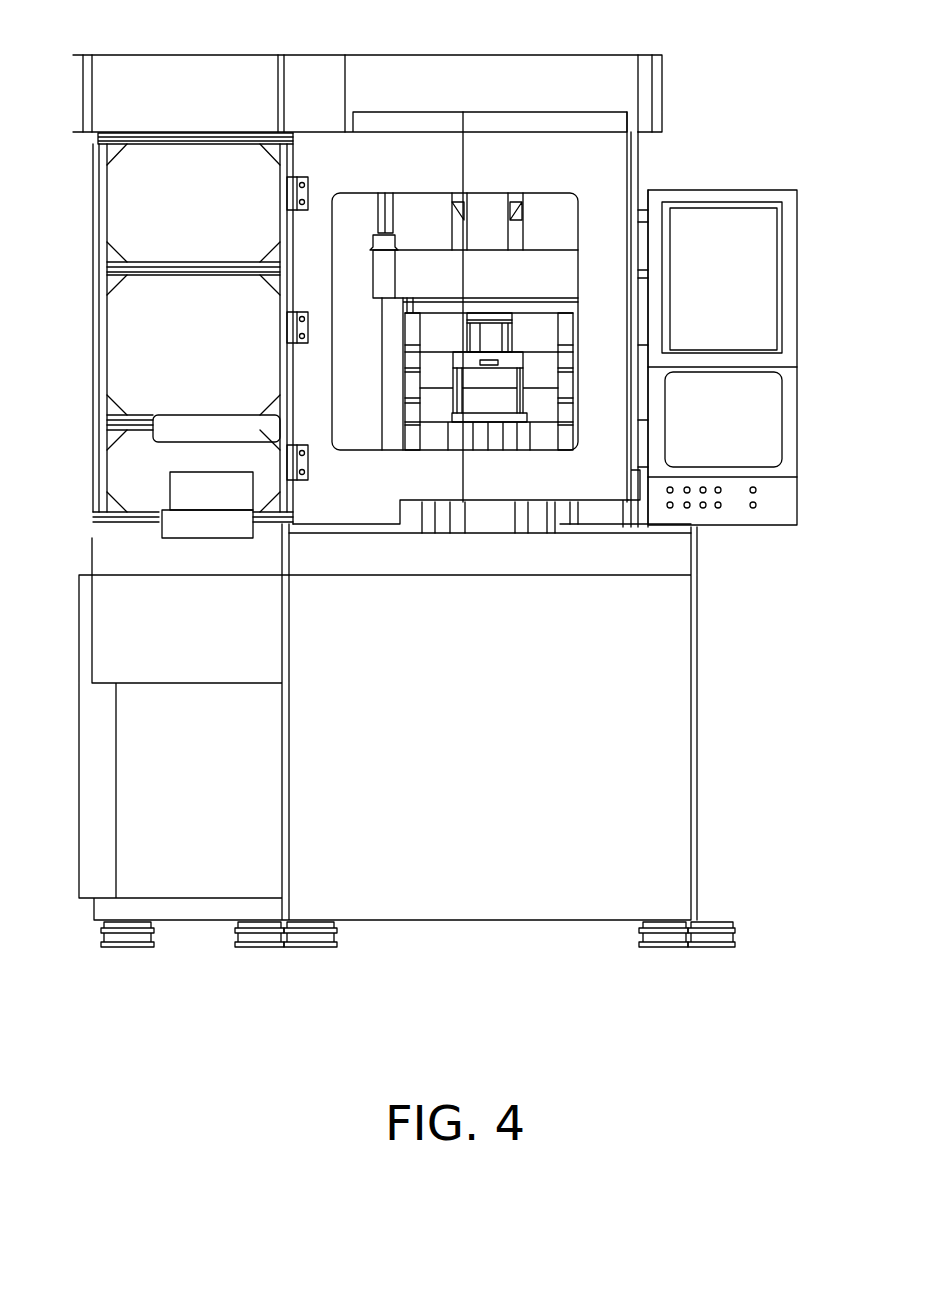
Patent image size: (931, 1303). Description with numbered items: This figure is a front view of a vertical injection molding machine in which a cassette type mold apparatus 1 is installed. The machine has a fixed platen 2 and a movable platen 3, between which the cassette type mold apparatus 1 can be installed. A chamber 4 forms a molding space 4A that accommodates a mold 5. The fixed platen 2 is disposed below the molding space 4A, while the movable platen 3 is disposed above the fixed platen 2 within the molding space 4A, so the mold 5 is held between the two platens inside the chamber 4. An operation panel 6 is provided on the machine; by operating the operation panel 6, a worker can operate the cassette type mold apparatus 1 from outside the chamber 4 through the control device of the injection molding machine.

The cassette type mold apparatus 1 is at (435, 473).
The fixed platen 2 is at (547, 443).
The movable platen 3 is at (527, 305).
The chamber 4 is at (545, 132).
The molding space 4A is at (362, 216).
The mold 5 is at (550, 403).
The operation panel 6 is at (733, 192).